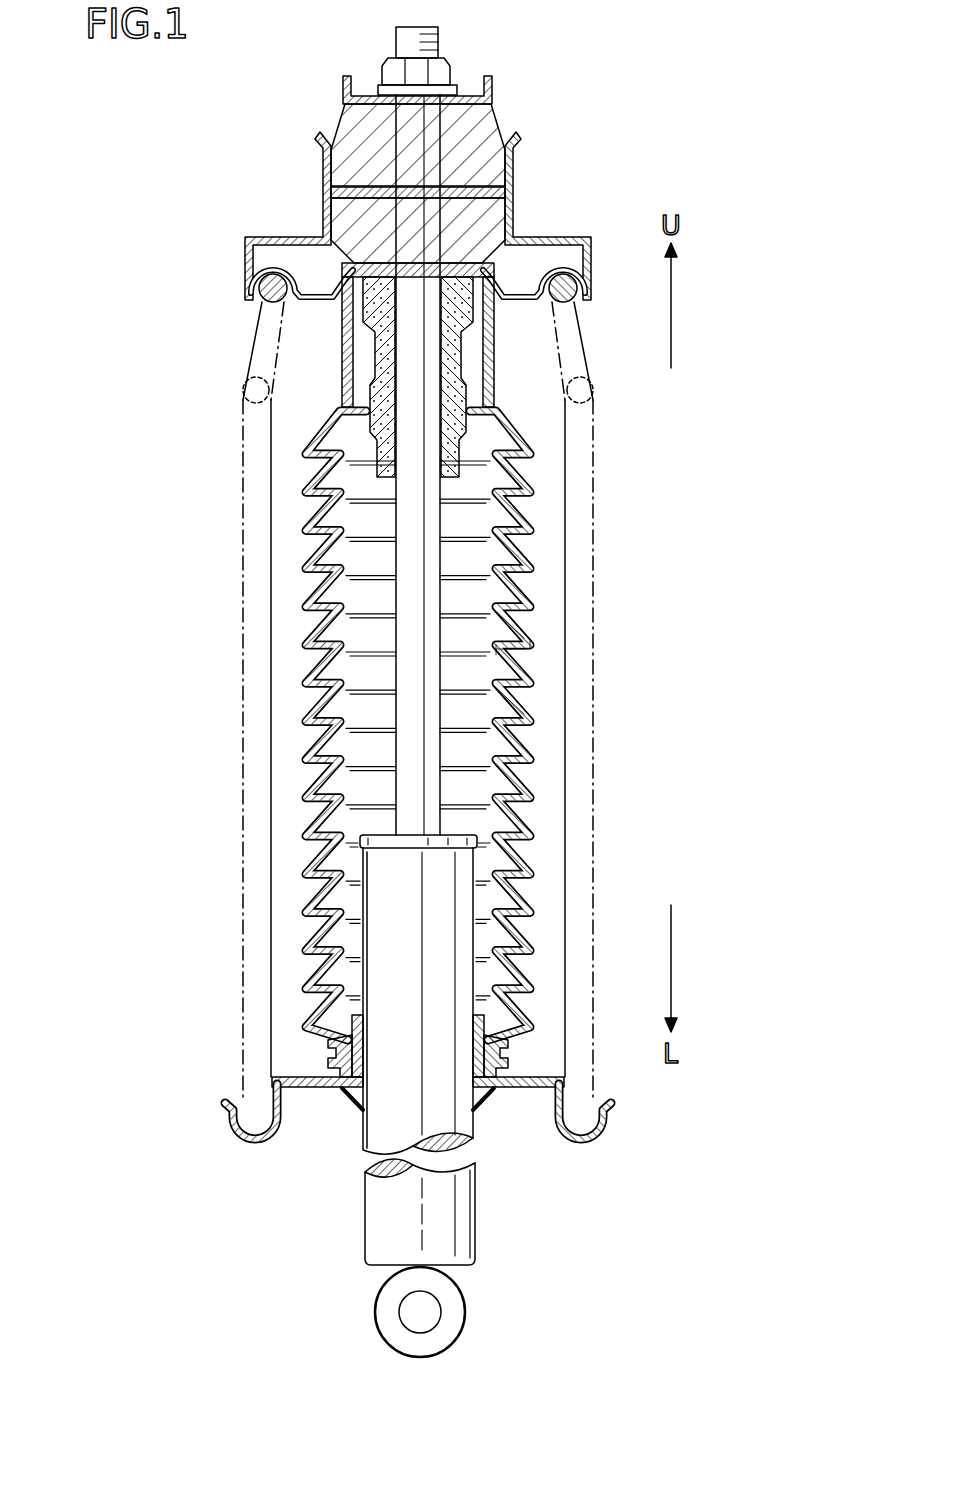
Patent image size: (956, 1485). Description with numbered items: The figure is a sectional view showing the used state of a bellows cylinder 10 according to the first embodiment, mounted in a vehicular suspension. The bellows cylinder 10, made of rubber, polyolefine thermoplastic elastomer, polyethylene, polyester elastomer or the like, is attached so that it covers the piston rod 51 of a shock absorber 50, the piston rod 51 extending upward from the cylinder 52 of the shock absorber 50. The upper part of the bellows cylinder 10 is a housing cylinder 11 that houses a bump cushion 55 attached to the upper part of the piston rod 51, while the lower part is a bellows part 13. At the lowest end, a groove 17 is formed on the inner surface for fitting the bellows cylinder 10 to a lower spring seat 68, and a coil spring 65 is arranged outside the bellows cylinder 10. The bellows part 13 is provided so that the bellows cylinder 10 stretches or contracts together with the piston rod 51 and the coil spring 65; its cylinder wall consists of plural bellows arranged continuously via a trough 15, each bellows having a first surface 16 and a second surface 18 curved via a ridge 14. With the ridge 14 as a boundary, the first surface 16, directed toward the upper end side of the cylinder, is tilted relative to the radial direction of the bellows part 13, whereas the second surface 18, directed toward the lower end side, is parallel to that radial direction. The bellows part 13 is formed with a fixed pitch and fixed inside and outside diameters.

The bellows cylinder 10 is at (464, 670).
The housing cylinder 11 is at (346, 380).
The bellows part 13 is at (527, 548).
The ridge 14 is at (537, 647).
The trough 15 is at (500, 606).
The first surface 16 is at (528, 630).
The groove 17 is at (505, 1050).
The second surface 18 is at (470, 647).
The shock absorber 50 is at (377, 726).
The piston rod 51 is at (400, 628).
The cylinder 52 is at (388, 994).
The bump cushion 55 is at (374, 344).
The coil spring 65 is at (240, 527).
The lower spring seat 68 is at (224, 1103).